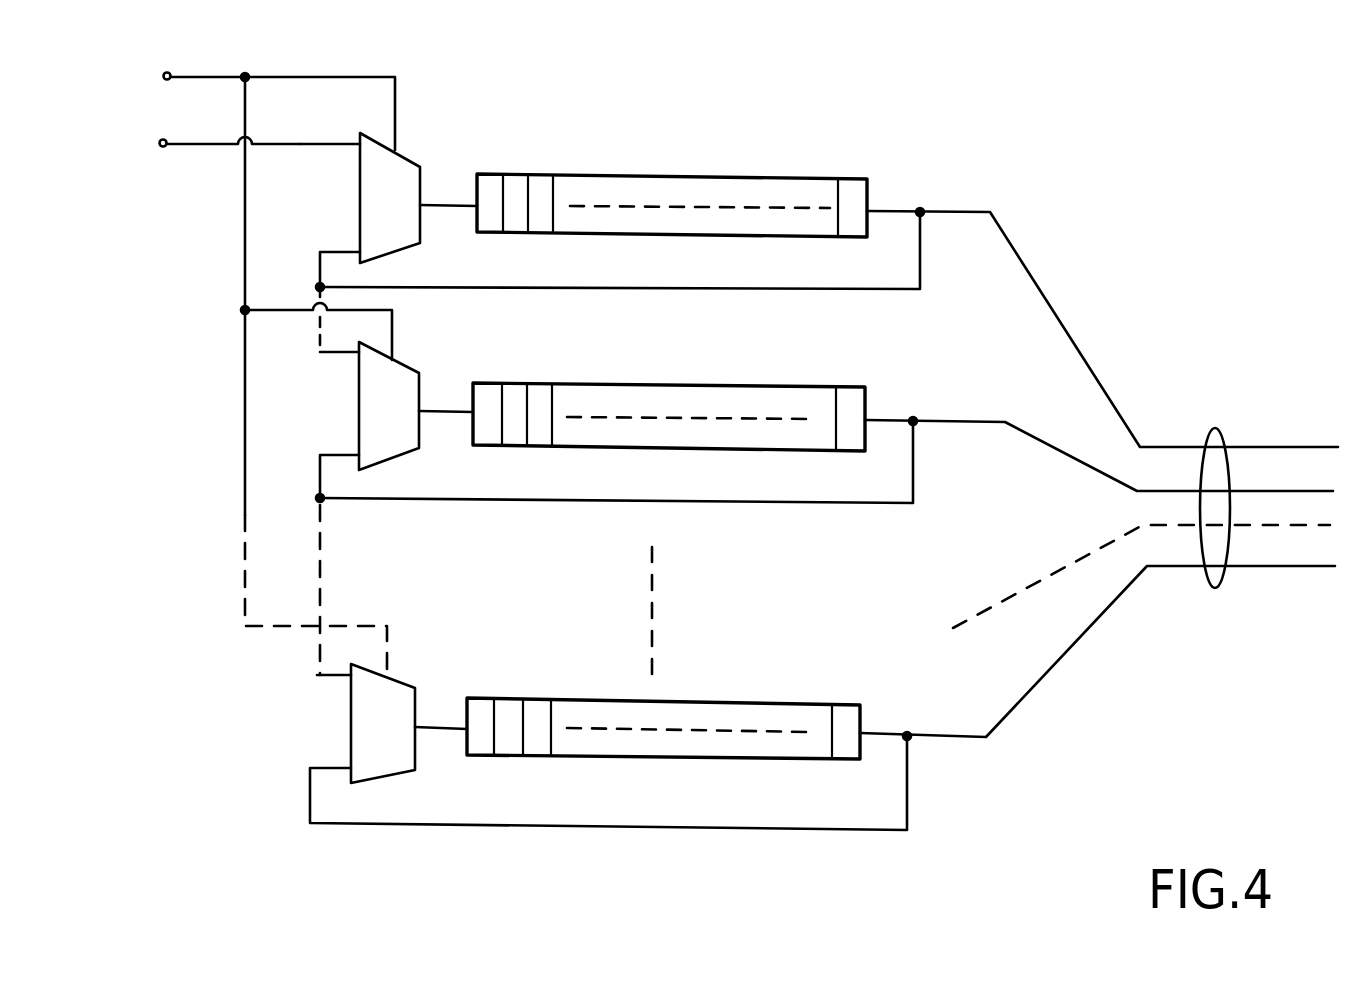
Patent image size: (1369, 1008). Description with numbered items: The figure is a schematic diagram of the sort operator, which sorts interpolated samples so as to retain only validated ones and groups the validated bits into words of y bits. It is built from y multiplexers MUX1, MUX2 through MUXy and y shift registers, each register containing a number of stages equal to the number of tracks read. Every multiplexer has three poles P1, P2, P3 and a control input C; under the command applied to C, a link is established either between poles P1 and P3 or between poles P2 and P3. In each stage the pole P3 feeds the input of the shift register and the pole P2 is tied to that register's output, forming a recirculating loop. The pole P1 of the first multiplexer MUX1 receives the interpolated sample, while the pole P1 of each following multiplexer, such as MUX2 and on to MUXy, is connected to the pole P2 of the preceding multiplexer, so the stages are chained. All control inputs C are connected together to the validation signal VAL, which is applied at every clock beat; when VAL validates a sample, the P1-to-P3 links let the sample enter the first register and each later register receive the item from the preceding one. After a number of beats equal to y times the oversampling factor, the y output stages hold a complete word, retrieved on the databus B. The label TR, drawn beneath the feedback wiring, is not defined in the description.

The validation signal VAL is at (270, 356).
The control input C is at (400, 139).
The first pole P1 is at (329, 139).
The second pole P2 is at (333, 245).
The third pole P3 is at (447, 194).
The multiplexer of index 1 MUX1 is at (400, 245).
The multiplexer of index 2 MUX2 is at (395, 460).
The multiplexer of index y MUXy is at (390, 780).
The transmitter TR is at (400, 843).
The databus B is at (1288, 413).